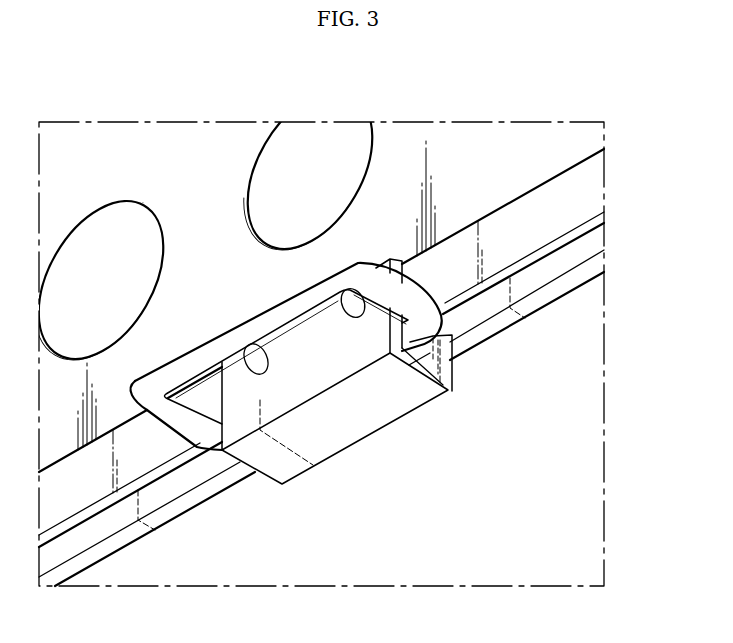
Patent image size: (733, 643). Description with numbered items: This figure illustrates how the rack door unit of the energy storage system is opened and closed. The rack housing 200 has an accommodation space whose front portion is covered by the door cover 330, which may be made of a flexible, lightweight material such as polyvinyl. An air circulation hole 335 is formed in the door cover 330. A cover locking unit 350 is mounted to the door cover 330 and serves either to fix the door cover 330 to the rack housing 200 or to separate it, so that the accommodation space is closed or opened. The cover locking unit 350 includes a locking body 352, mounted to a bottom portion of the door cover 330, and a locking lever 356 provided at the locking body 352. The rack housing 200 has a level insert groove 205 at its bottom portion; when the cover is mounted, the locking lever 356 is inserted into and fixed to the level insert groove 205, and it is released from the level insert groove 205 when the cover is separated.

The rack housing 200 is at (354, 363).
The locking body 352 is at (583, 190).
The door cover 330 is at (180, 172).
The air circulation hole 335 is at (258, 157).
The cover locking unit 350 is at (299, 413).
The locking lever 356 is at (338, 430).
The level insert groove 205 is at (448, 392).